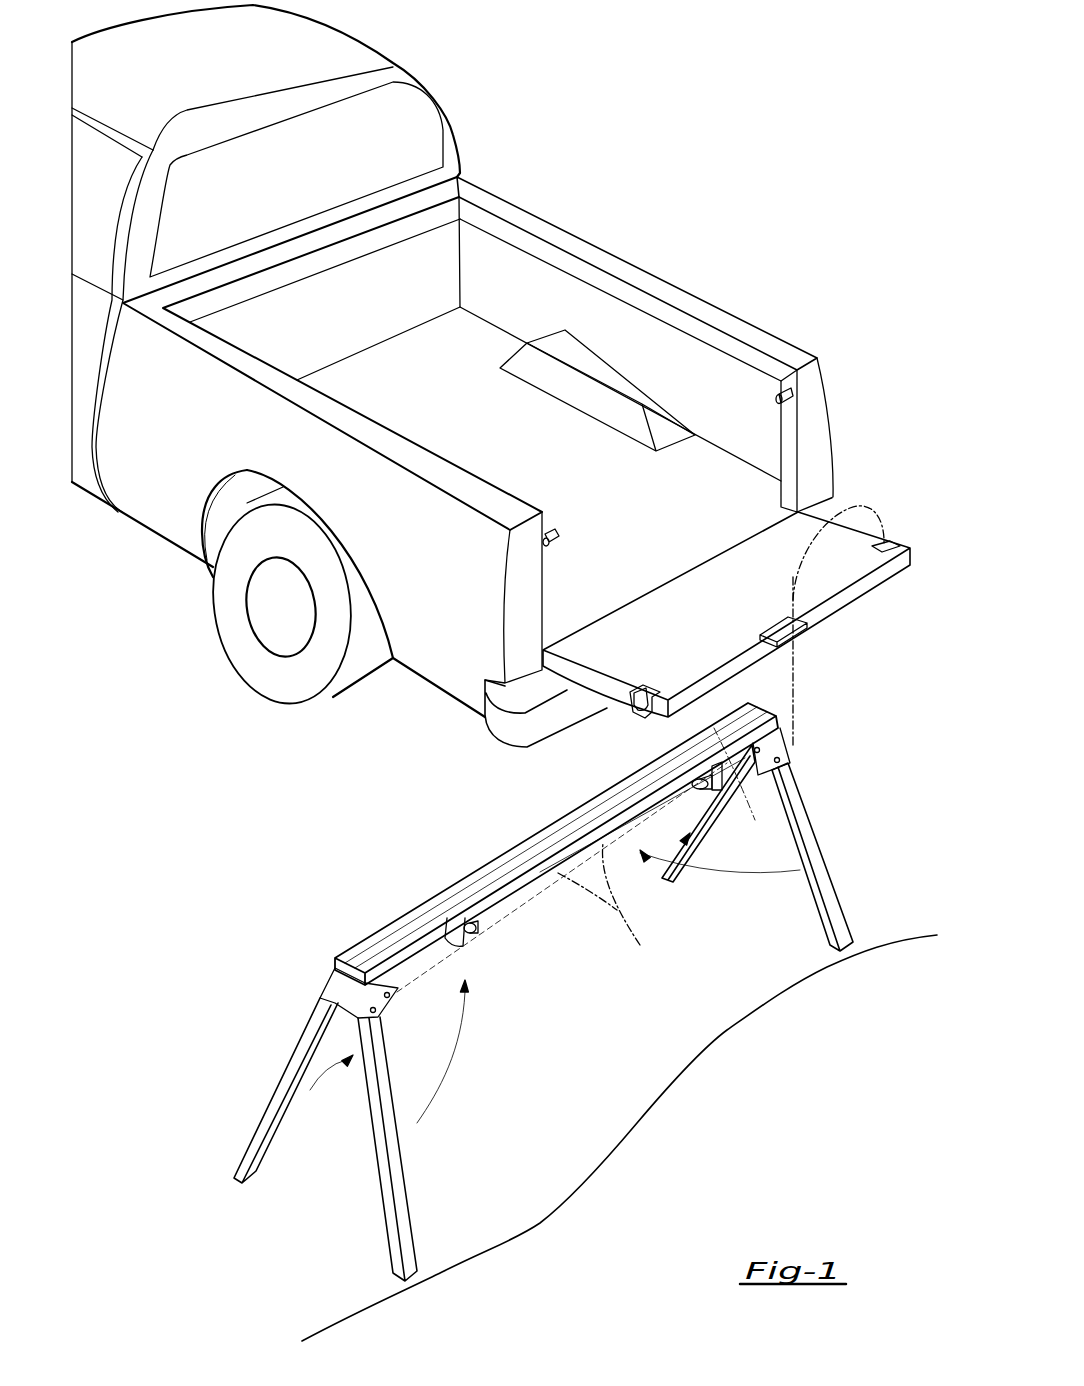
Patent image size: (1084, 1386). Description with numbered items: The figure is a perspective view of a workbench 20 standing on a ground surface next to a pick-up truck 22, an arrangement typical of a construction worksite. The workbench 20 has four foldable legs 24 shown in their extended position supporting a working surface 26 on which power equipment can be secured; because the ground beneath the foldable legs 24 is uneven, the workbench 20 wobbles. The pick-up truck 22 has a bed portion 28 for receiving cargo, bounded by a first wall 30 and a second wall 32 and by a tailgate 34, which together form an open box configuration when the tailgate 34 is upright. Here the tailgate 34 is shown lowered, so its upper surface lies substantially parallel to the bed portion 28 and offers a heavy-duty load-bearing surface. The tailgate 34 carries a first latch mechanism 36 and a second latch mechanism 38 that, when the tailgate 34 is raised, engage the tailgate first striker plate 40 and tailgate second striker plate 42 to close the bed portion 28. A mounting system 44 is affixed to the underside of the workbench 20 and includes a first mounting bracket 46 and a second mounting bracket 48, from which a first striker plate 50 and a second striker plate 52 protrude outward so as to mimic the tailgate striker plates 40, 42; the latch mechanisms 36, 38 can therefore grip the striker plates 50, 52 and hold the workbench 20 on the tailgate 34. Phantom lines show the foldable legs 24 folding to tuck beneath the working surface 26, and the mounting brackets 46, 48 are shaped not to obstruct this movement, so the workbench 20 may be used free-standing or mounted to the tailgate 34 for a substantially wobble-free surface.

The workbench 20 is at (463, 882).
The pick-up truck 22 is at (594, 239).
The foldable legs 24 is at (683, 863).
The working surface 26 is at (608, 803).
The bed portion 28 is at (403, 397).
The first wall 30 is at (471, 496).
The second wall 32 is at (758, 338).
The tailgate 34 is at (705, 612).
The first latch mechanism 36 is at (640, 708).
The second latch mechanism 38 is at (880, 550).
The tailgate first striker plate 40 is at (553, 531).
The tailgate second striker plate 42 is at (778, 403).
The mounting system 44 is at (713, 817).
The first mounting bracket 46 is at (477, 918).
The second mounting bracket 48 is at (722, 745).
The first striker plate 50 is at (473, 933).
The second striker plate 52 is at (702, 805).